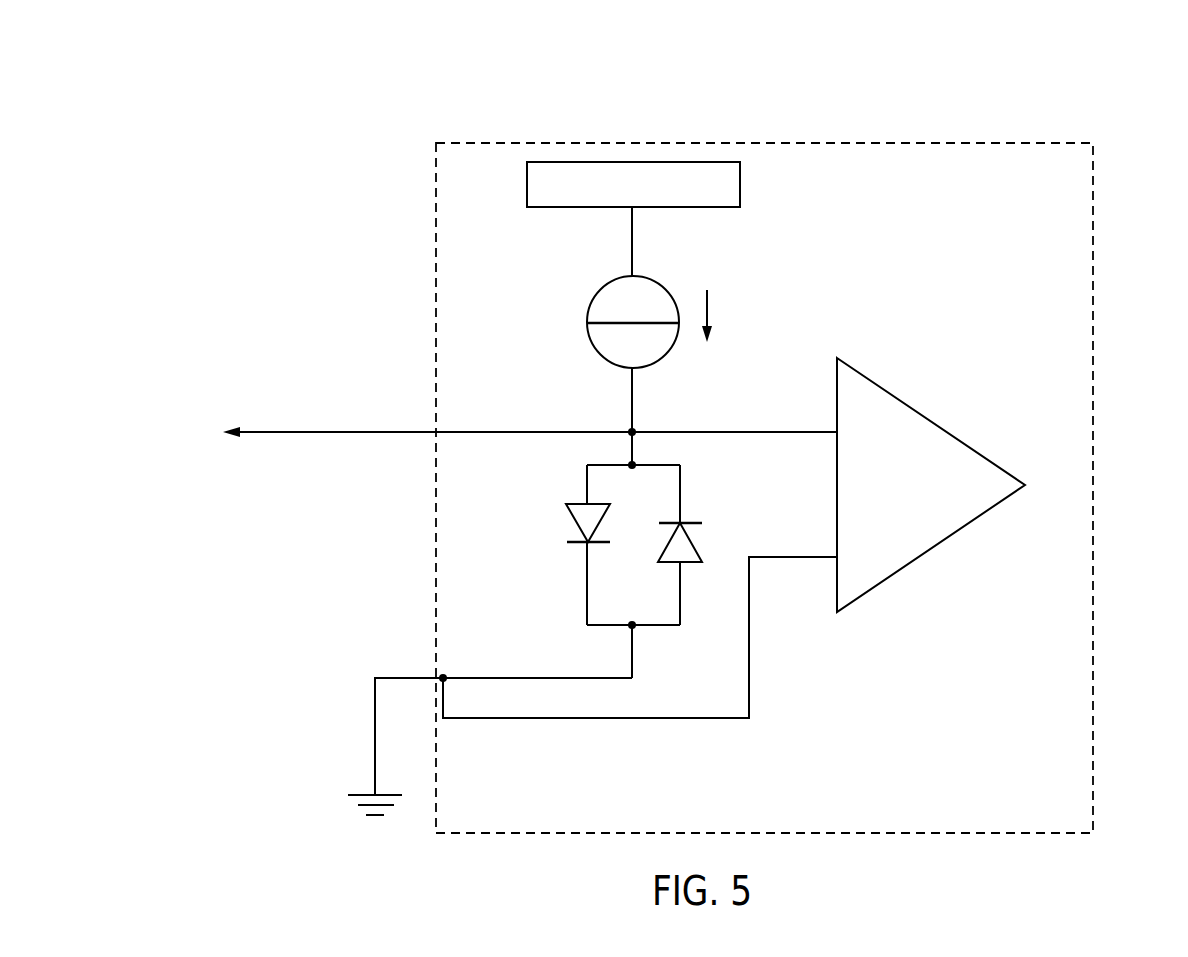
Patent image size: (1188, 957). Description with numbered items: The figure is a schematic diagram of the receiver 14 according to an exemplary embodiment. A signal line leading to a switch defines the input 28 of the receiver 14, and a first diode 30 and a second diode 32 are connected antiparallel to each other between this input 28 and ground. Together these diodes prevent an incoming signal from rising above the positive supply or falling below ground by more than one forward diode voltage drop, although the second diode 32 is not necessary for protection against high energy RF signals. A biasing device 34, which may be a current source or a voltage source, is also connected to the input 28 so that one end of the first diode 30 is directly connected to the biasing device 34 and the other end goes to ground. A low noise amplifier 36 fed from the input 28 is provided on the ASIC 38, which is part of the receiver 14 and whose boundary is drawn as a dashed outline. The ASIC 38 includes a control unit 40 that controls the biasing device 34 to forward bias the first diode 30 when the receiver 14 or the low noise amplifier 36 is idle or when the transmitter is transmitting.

The receiver 14 is at (1143, 98).
The input 28 is at (630, 431).
The first diode 30 is at (572, 522).
The second diode 32 is at (697, 545).
The biasing device 34 is at (599, 291).
The low noise amplifier 36 is at (937, 420).
The ASIC 38 is at (812, 141).
The control unit 40 is at (740, 185).